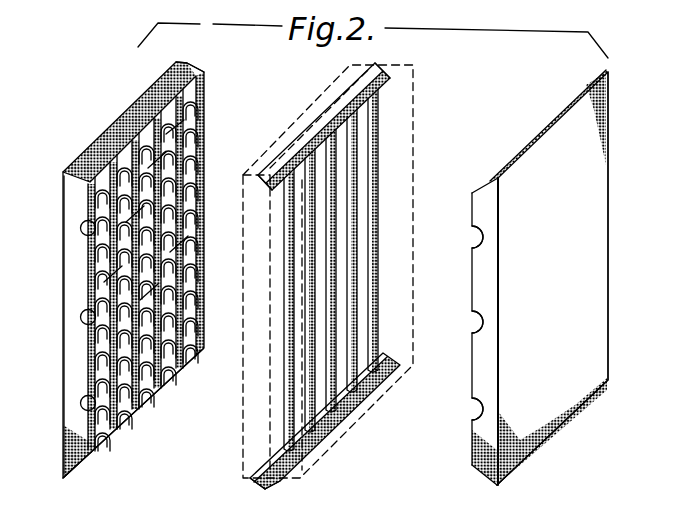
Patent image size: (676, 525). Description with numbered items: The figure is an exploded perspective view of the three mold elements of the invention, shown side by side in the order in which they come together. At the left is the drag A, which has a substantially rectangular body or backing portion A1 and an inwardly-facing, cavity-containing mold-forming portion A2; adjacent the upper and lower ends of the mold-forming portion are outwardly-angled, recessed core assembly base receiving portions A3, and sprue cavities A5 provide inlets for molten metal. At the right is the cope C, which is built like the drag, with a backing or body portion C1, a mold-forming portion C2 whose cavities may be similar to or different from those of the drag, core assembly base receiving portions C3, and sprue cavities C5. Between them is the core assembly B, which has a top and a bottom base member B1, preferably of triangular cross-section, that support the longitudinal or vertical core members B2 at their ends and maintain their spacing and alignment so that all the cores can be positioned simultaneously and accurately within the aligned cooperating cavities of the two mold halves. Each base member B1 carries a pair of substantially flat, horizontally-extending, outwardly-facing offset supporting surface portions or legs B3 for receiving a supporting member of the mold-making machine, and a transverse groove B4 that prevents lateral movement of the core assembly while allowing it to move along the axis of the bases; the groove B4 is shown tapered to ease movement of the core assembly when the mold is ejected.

The drag A is at (61, 482).
The backing portion A1 is at (64, 226).
The mold-forming portion A2 is at (181, 373).
The core assembly base receiving portions A3 is at (203, 72).
The sprue cavities A5 is at (84, 397).
The core assembly B is at (270, 487).
The base member B1 is at (337, 470).
The core members B2 is at (378, 183).
The supporting surface portions B3 is at (405, 64).
The groove B4 is at (377, 66).
The cope C is at (494, 488).
The body portion C1 is at (549, 437).
The mold-forming portion C2 is at (472, 380).
The core assembly base receiving portions C3 is at (484, 182).
The sprue cavities C5 is at (472, 240).